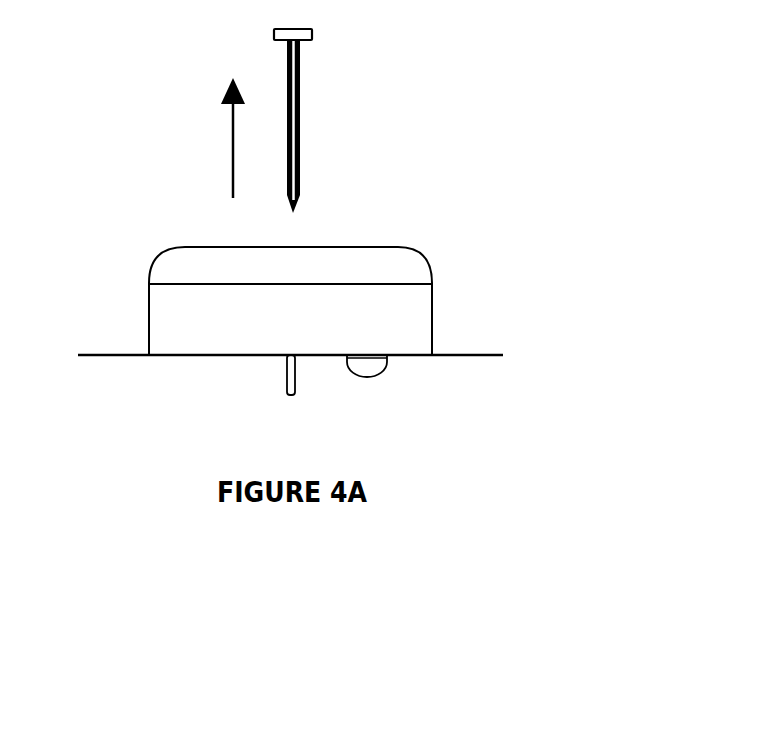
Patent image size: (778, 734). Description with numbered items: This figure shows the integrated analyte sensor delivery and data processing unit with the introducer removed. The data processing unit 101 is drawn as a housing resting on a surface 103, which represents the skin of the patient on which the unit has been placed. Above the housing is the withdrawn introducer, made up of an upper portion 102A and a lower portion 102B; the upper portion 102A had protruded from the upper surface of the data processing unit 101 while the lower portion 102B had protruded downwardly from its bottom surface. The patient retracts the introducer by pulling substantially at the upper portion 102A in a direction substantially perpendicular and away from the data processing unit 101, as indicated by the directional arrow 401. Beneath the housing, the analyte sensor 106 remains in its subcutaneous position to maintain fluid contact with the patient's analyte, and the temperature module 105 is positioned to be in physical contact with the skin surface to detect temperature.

The data processing unit 101 is at (160, 262).
The upper portion of the introducer 102A is at (300, 28).
The lower portion of the introducer 102B is at (299, 187).
The mounting surface 103 is at (480, 350).
The temperature module 105 is at (383, 373).
The analyte sensor 106 is at (287, 375).
The directional arrow 401 is at (232, 148).